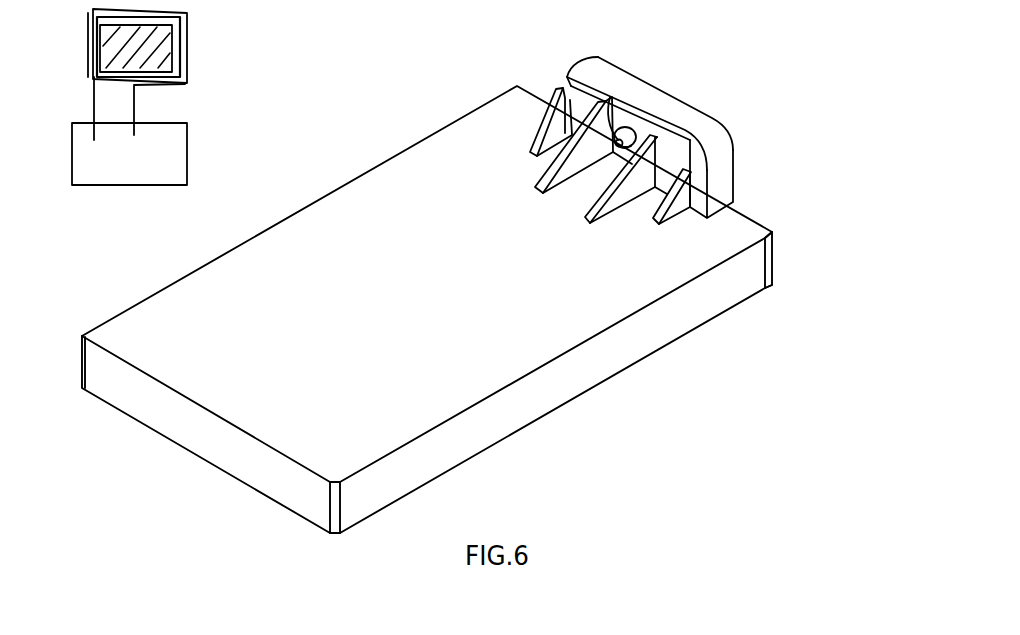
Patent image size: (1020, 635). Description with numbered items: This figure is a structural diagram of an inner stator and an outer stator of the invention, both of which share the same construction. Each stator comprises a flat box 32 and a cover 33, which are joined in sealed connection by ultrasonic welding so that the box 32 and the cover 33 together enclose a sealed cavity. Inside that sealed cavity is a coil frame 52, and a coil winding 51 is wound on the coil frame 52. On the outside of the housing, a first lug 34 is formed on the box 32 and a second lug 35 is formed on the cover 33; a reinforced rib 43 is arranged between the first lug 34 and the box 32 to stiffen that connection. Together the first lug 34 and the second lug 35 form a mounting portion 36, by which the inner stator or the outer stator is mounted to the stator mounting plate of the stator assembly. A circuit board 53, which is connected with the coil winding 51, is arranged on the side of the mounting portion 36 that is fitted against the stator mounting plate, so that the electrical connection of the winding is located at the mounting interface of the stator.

The box 32 is at (545, 390).
The cover 33 is at (768, 252).
The first lug 34 is at (558, 84).
The second lug 35 is at (648, 92).
The mounting portion 36 is at (690, 117).
The reinforced rib 43 is at (565, 152).
The coil winding 51 is at (183, 48).
The coil frame 52 is at (112, 52).
The circuit board 53 is at (108, 165).